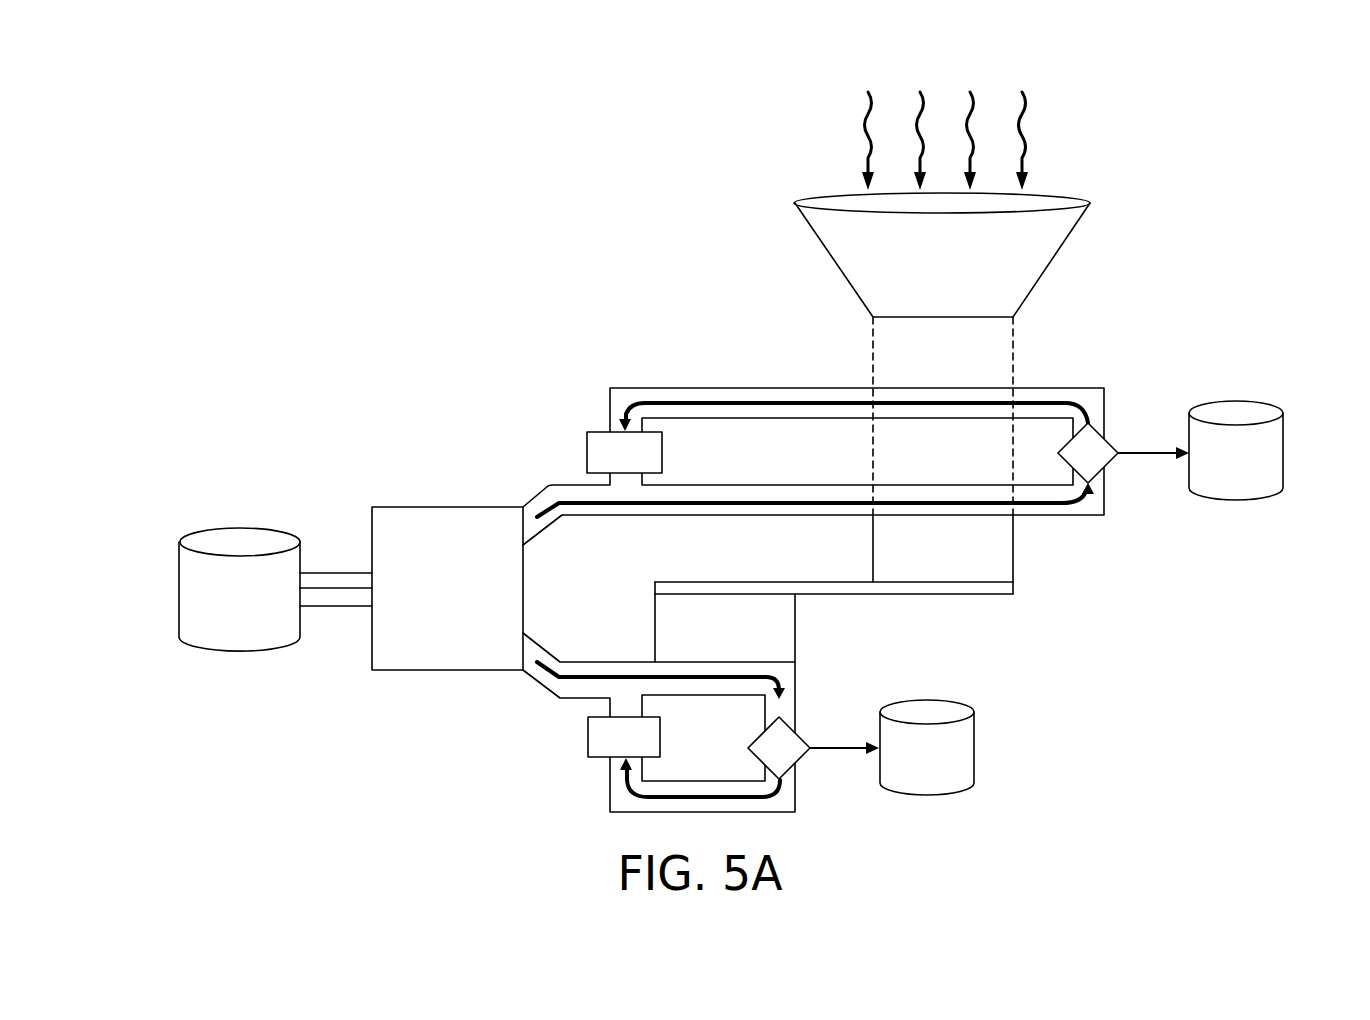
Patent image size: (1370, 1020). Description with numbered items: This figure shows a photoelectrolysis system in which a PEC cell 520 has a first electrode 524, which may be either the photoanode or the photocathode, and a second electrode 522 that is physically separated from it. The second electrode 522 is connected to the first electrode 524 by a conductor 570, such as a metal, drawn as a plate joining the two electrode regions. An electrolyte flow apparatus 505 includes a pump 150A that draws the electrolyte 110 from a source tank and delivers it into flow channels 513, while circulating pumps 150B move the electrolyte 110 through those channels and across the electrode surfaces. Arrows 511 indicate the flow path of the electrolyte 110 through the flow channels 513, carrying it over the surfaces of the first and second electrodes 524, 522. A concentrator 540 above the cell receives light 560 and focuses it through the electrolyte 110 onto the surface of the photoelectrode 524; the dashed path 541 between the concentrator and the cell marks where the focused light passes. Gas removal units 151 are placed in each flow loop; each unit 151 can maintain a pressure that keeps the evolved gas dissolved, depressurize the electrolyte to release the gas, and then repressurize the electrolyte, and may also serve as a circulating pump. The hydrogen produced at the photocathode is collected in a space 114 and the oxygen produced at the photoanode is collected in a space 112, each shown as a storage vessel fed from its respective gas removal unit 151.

The electrolyte 110 is at (240, 527).
The space 112 is at (950, 710).
The space 114 is at (1258, 408).
The pump 150A is at (448, 507).
The circulating pump 150B is at (587, 455).
The gas removal unit 151 is at (1113, 465).
The electrolyte flow apparatus 505 is at (1010, 630).
The arrows 511 is at (729, 402).
The flow channels 513 is at (1097, 388).
The PEC cell 520 is at (784, 476).
The second electrode 522 is at (797, 625).
The first electrode 524 is at (872, 551).
The concentrator 540 is at (1053, 262).
The light path 541 is at (990, 351).
The light 560 is at (1020, 140).
The conductor 570 is at (898, 597).